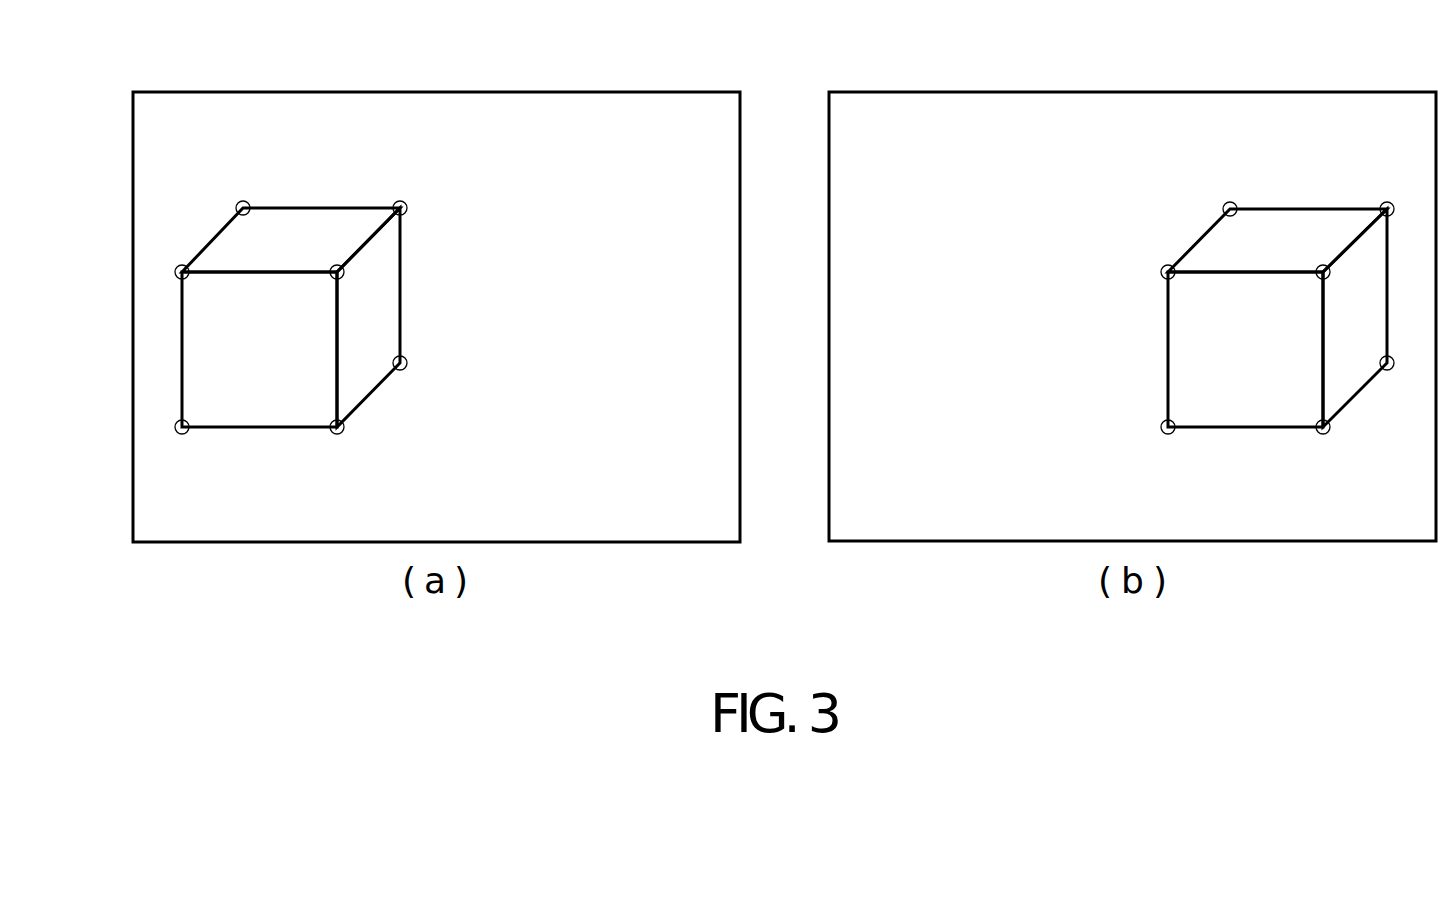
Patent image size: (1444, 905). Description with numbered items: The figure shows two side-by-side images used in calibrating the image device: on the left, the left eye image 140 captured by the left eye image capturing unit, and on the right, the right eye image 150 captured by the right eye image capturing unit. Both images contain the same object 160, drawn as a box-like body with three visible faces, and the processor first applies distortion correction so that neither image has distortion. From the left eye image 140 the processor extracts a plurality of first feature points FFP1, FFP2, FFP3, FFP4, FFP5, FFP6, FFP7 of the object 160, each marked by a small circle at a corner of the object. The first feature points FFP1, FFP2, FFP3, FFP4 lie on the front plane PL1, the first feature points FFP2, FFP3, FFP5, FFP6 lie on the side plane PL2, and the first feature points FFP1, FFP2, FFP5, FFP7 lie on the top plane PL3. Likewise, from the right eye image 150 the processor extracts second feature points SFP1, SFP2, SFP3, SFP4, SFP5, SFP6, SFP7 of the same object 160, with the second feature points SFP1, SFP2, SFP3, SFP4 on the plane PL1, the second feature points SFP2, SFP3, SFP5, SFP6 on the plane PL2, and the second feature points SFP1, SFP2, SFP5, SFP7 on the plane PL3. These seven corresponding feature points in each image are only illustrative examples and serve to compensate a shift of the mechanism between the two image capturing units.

The left eye image 140 is at (496, 91).
The right eye image 150 is at (1192, 91).
The object 160 is at (783, 313).
The plane PL1 is at (258, 400).
The plane PL2 is at (383, 314).
The plane PL3 is at (278, 223).
The first feature point FFP1 is at (165, 255).
The first feature point FFP2 is at (319, 255).
The first feature point FFP3 is at (339, 444).
The first feature point FFP4 is at (182, 444).
The first feature point FFP5 is at (402, 191).
The first feature point FFP6 is at (424, 380).
The first feature point FFP7 is at (241, 191).
The second feature point SFP1 is at (1151, 255).
The second feature point SFP2 is at (1306, 255).
The second feature point SFP3 is at (1326, 445).
The second feature point SFP4 is at (1169, 445).
The second feature point SFP5 is at (1389, 191).
The second feature point SFP6 is at (1402, 385).
The second feature point SFP7 is at (1228, 191).